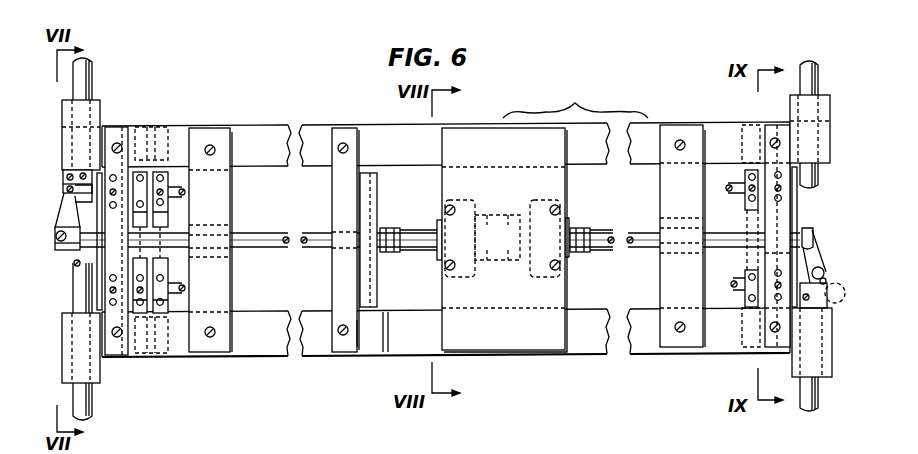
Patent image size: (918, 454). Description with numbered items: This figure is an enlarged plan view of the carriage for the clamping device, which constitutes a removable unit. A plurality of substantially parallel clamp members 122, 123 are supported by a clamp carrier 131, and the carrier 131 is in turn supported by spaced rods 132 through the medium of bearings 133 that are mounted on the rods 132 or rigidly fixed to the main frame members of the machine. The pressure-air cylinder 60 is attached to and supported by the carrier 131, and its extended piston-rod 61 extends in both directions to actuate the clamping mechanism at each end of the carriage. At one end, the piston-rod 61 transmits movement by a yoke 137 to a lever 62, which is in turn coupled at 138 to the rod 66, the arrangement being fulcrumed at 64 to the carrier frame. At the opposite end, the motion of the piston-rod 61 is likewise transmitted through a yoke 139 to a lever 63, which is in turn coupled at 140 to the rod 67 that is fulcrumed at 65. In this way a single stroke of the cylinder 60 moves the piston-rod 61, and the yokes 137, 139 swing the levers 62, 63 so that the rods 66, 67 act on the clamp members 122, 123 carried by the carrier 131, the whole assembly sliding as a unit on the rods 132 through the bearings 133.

The pressure-air cylinder 60 is at (496, 240).
The piston-rod 61 is at (303, 233).
The lever 62 is at (63, 214).
The lever 63 is at (812, 253).
The fulcrum 64 is at (68, 177).
The fulcrum 65 is at (822, 282).
The rod 66 is at (178, 188).
The rod 67 is at (182, 291).
The clamp member 122 is at (120, 138).
The clamp member 123 is at (155, 130).
The clamp carrier 131 is at (575, 99).
The rod 132 is at (90, 70).
The bearing 133 is at (92, 108).
The yoke 137 is at (57, 242).
The coupling 138 is at (78, 175).
The yoke 139 is at (813, 228).
The coupling 140 is at (840, 307).